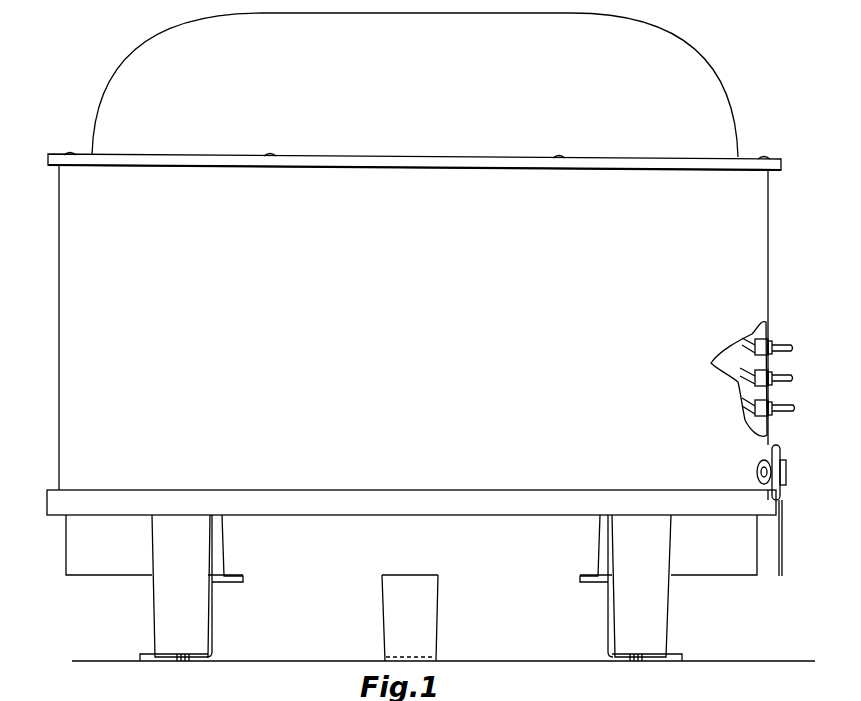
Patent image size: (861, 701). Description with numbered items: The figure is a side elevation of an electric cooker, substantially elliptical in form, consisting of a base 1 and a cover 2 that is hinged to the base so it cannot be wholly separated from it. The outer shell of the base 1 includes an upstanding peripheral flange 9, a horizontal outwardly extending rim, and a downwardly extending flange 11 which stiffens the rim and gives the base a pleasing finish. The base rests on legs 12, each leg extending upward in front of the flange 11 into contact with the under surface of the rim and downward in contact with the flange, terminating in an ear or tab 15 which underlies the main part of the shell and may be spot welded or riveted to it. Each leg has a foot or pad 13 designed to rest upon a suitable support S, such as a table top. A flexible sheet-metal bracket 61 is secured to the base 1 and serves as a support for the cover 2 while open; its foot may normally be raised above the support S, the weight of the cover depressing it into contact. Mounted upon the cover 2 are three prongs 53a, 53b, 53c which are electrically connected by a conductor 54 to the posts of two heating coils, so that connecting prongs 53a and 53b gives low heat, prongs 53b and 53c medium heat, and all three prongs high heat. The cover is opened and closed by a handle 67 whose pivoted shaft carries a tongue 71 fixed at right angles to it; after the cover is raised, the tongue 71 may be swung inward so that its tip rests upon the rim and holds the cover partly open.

The base 1 is at (57, 555).
The cover 2 is at (52, 268).
The upstanding peripheral flange 9 is at (411, 545).
The downwardly extending flange 11 is at (411, 503).
The legs 12 is at (229, 622).
The foot or pad 13 is at (157, 659).
The ear or tab 15 is at (236, 582).
The bracket 61 is at (410, 618).
The prong 53a is at (787, 343).
The prong 53b is at (787, 379).
The prong 53c is at (780, 412).
The conductor 54 is at (736, 386).
The handle 67 is at (783, 469).
The tongue 71 is at (776, 568).
The support S is at (87, 660).